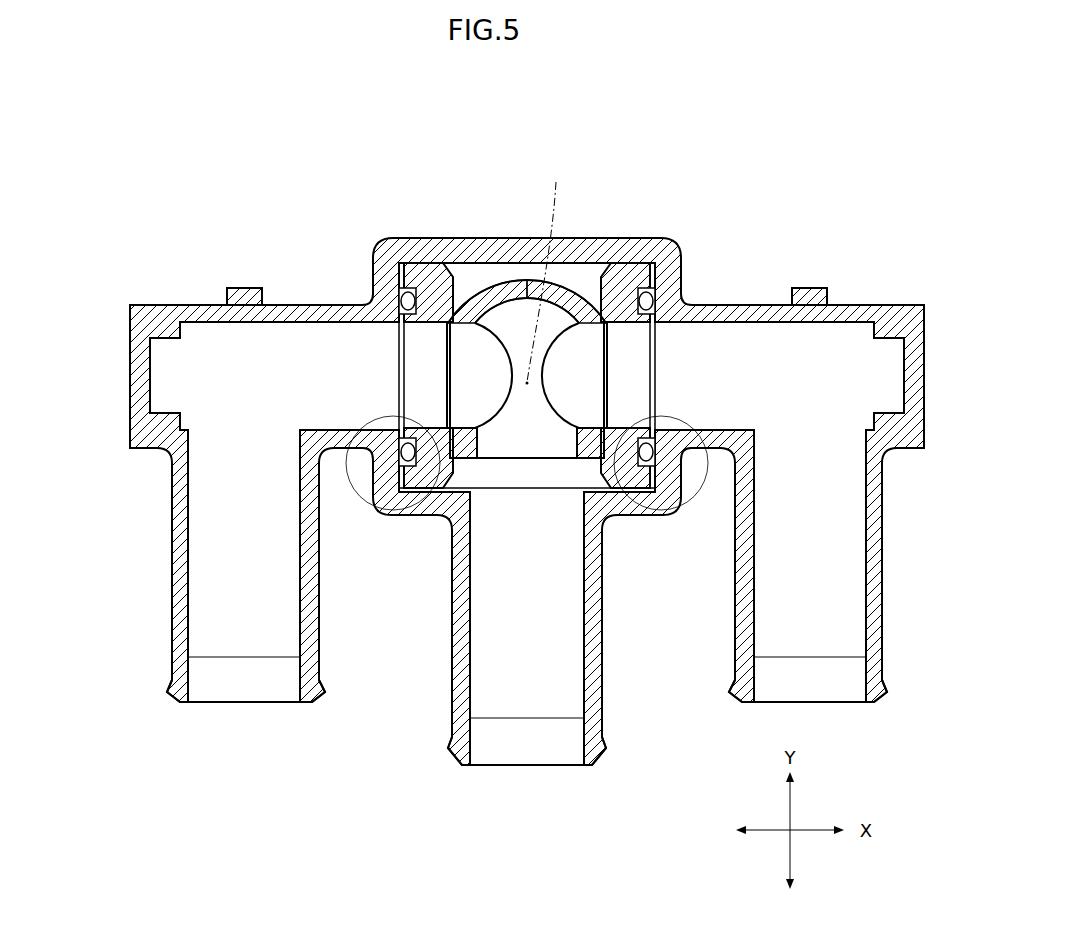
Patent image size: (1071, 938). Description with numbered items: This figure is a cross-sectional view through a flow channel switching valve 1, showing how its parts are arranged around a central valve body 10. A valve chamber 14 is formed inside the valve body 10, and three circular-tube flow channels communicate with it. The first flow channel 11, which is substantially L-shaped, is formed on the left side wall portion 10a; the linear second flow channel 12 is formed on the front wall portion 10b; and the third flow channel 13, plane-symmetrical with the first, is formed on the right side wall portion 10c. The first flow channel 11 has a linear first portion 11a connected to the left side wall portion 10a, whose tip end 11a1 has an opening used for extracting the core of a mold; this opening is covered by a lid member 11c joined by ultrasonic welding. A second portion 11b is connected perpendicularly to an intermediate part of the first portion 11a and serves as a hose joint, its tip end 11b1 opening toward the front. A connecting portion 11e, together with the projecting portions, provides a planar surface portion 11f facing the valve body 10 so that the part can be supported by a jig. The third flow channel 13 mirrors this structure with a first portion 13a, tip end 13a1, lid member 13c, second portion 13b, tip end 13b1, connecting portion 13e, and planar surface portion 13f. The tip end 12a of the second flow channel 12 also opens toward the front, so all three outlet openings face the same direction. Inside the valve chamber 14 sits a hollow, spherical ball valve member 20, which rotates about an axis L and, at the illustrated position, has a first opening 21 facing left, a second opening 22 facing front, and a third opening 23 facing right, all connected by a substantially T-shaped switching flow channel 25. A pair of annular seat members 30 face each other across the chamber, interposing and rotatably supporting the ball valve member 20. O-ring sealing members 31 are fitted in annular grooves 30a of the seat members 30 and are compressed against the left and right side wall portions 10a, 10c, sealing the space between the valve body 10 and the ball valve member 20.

The flow channel switching valve 1 is at (288, 176).
The valve body 10 is at (575, 250).
The left side wall portion 10a is at (368, 283).
The front wall portion 10b is at (622, 518).
The right side wall portion 10c is at (688, 283).
The first flow channel 11 is at (172, 665).
The first portion 11a is at (202, 310).
The tip end 11a1 is at (152, 318).
The second portion 11b is at (172, 523).
The tip end 11b1 is at (311, 703).
The lid member 11c is at (127, 307).
The connecting portion 11e is at (237, 290).
The planar surface portion 11f is at (272, 303).
The second flow channel 12 is at (452, 720).
The tip end 12a is at (589, 768).
The third flow channel 13 is at (735, 665).
The first portion 13a is at (852, 310).
The tip end 13a1 is at (902, 318).
The second portion 13b is at (882, 523).
The tip end 13b1 is at (880, 703).
The lid member 13c is at (927, 307).
The connecting portion 13e is at (817, 290).
The planar surface portion 13f is at (782, 303).
The valve chamber 14 is at (512, 250).
The ball valve member 20 is at (477, 250).
The first opening 21 is at (380, 462).
The second opening 22 is at (447, 520).
The third opening 23 is at (693, 450).
The switching flow channel 25 is at (588, 358).
The seat members 30 is at (440, 248).
The annular grooves 30a is at (389, 498).
The sealing members 31 is at (388, 258).
The axis L is at (545, 269).